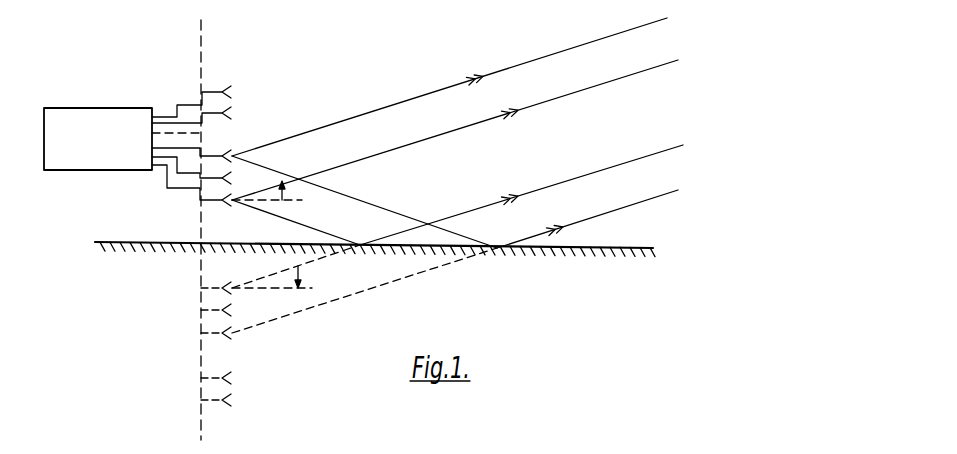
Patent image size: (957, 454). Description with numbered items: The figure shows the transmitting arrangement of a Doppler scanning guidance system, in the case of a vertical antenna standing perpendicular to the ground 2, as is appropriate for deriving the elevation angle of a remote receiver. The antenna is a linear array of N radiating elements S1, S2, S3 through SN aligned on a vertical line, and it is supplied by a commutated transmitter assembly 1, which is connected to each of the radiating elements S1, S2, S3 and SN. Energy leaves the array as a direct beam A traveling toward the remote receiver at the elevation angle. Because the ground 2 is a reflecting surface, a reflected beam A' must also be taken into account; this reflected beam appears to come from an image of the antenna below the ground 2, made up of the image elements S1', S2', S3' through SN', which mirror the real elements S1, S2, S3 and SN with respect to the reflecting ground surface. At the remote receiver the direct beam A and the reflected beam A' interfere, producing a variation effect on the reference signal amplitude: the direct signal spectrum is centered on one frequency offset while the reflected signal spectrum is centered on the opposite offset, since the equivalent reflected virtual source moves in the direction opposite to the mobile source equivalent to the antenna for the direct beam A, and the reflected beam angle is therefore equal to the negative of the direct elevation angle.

The commutated transmitter assembly 1 is at (106, 117).
The ground 2 is at (167, 242).
The Nth radiating element SN is at (210, 92).
The third radiating element S3 is at (210, 140).
The second radiating element S2 is at (206, 174).
The first radiating element S1 is at (202, 197).
The image of first radiating element S1' is at (280, 269).
The image of second radiating element S2' is at (233, 311).
The image of third radiating element S3' is at (233, 339).
The image of Nth radiating element SN' is at (234, 403).
The direct beam A is at (455, 109).
The reflected beam A' is at (521, 196).